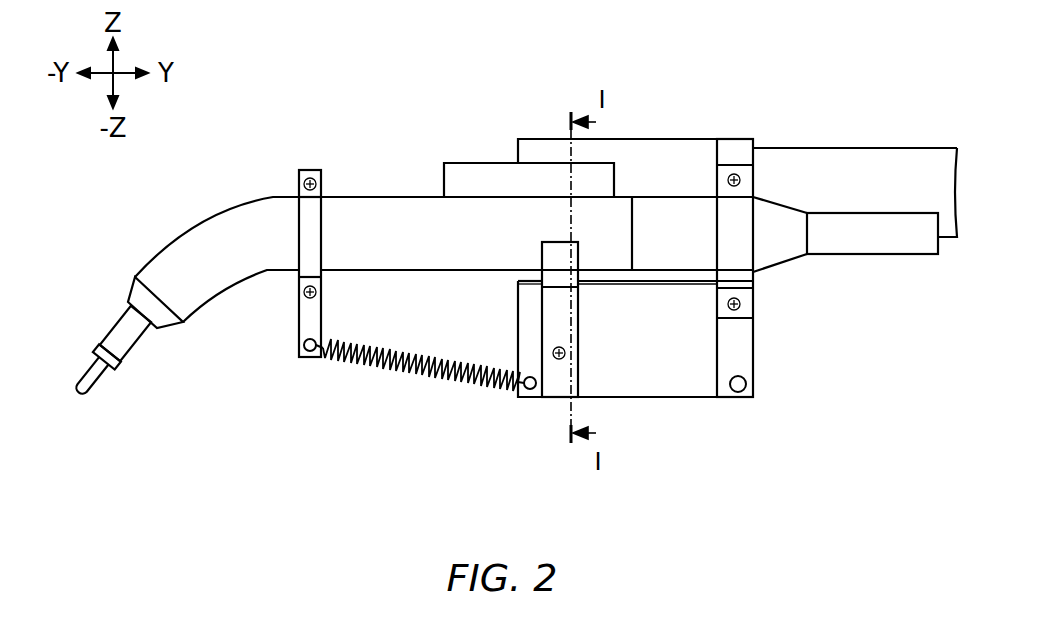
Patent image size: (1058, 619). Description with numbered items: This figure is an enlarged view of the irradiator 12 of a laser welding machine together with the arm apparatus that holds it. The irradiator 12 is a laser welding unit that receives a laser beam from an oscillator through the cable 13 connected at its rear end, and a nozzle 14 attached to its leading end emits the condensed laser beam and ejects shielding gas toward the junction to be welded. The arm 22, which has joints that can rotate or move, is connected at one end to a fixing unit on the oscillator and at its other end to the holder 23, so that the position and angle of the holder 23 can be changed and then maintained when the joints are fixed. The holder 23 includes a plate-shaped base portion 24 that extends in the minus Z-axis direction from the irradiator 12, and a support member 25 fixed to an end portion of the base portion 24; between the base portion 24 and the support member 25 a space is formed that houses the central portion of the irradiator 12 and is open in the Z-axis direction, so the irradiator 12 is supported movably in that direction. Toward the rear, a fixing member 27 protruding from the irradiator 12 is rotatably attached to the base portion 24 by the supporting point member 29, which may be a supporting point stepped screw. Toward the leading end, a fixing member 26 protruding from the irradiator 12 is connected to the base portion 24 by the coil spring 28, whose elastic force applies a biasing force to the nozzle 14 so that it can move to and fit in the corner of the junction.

The irradiator 12 is at (352, 220).
The cable 13 is at (862, 245).
The nozzle 14 is at (82, 385).
The arm 22 is at (830, 168).
The holder 23 is at (652, 118).
The base portion 24 is at (658, 387).
The support member 25 is at (552, 390).
The fixing member 26 is at (298, 300).
The fixing member 27 is at (755, 340).
The coil spring 28 is at (410, 375).
The supporting point member 29 is at (735, 382).